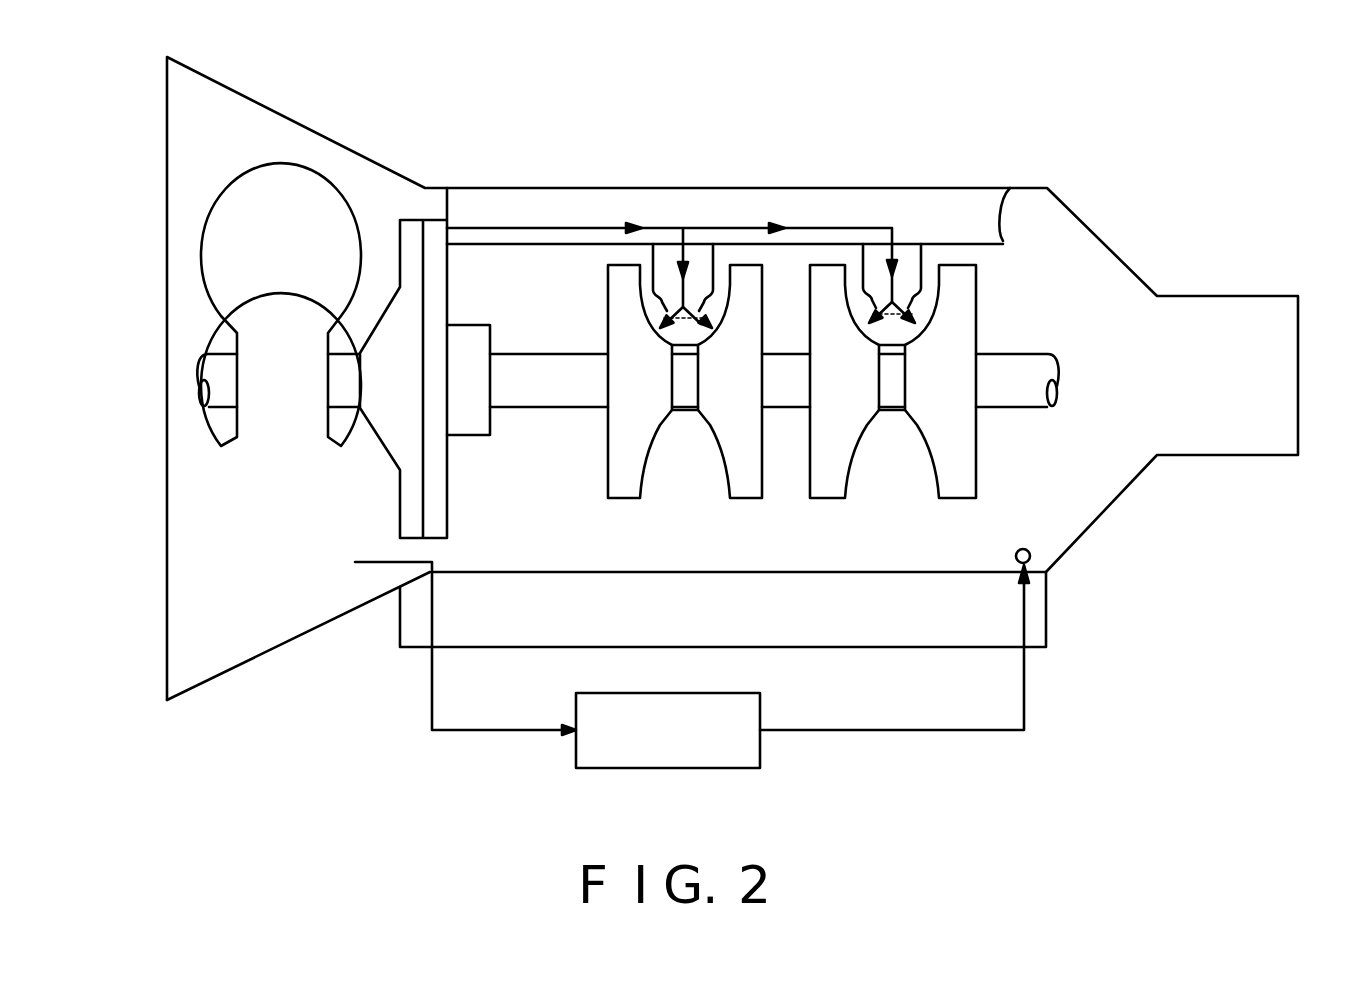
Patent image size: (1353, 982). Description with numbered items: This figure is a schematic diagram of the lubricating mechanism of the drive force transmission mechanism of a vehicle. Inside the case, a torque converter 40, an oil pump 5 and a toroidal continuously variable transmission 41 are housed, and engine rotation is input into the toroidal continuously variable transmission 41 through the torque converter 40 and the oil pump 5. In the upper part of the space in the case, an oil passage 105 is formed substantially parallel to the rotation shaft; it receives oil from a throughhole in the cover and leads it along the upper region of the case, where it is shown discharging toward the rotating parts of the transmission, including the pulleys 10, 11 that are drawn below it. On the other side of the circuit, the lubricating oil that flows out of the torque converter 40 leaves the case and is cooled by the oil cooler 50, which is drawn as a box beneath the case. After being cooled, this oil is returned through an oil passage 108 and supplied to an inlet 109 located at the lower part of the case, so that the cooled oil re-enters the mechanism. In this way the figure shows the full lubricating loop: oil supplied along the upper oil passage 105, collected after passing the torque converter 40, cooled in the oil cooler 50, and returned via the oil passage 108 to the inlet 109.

The oil pump 5 is at (408, 218).
The primary pulley 10 is at (681, 474).
The secondary pulley 11 is at (889, 474).
The torque converter 40 is at (307, 168).
The toroidal continuously variable transmission 41 is at (596, 304).
The oil cooler 50 is at (672, 769).
The oil passage 105 is at (598, 227).
The oil passage 108 is at (945, 731).
The inlet 109 is at (1030, 553).